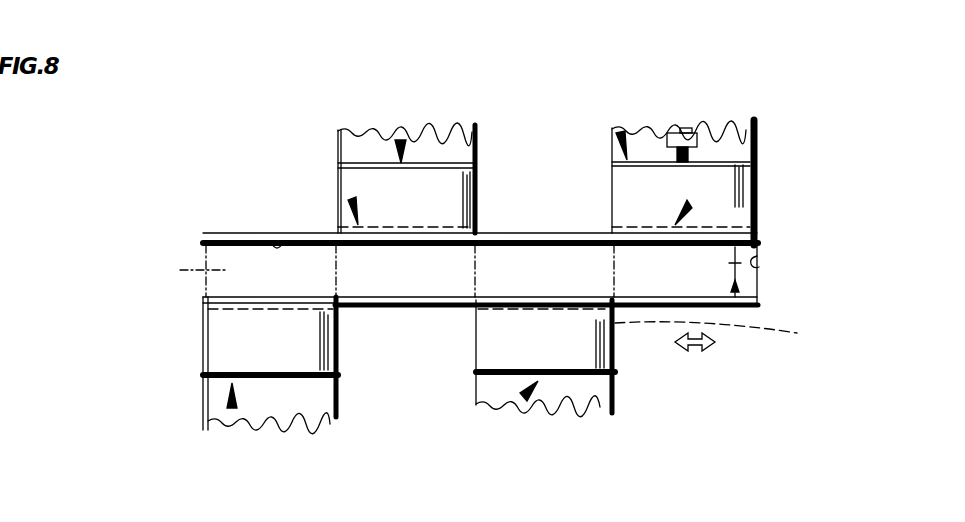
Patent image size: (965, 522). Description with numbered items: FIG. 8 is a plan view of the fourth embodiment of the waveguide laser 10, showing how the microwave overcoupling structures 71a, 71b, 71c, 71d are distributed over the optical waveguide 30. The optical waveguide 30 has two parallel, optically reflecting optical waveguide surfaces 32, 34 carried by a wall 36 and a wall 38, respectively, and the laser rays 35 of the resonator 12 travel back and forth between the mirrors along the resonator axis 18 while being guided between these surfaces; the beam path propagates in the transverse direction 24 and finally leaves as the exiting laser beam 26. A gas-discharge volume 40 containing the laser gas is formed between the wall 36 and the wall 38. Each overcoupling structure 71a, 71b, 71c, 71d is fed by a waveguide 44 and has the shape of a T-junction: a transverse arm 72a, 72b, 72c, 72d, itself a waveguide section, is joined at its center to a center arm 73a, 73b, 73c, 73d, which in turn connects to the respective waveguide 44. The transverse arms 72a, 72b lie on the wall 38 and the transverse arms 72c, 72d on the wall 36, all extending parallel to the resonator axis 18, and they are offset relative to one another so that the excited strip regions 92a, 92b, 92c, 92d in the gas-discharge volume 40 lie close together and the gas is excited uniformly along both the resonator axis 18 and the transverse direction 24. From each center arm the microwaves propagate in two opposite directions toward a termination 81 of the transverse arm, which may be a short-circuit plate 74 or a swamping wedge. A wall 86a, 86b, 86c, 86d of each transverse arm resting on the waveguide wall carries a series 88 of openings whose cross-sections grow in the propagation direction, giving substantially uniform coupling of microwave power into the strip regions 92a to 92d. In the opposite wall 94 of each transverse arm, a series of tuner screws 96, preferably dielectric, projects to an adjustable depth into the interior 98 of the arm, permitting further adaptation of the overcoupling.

The waveguide laser 10 is at (850, 92).
The resonator 12 is at (772, 254).
The resonator axis 18 is at (202, 270).
The transverse direction 24 is at (697, 348).
The exiting laser beam 26 is at (760, 278).
The optical waveguide 30 is at (527, 237).
The optical waveguide surface 32 is at (397, 297).
The optical waveguide surface 34 is at (262, 237).
The laser rays 35 is at (758, 300).
The wall 36 is at (413, 300).
The wall 38 is at (297, 237).
The gas-discharge volume 40 is at (425, 287).
The waveguide 44 is at (470, 128).
The overcoupling structure 71a is at (401, 140).
The overcoupling structure 71b is at (617, 133).
The overcoupling structure 71c is at (523, 398).
The overcoupling structure 71d is at (232, 408).
The transverse arm 72a is at (352, 200).
The transverse arm 72b is at (640, 162).
The transverse arm 72c is at (615, 367).
The transverse arm 72d is at (205, 362).
The center arm 73a is at (476, 125).
The center arm 73b is at (720, 140).
The center arm 73c is at (567, 408).
The center arm 73d is at (203, 425).
The short-circuit plate 74 is at (725, 168).
The termination 81 is at (430, 175).
The wall 86a is at (460, 150).
The wall 86b is at (612, 220).
The wall 86c is at (518, 305).
The wall 86d is at (240, 237).
The series of openings 88 is at (333, 228).
The strip region 92a is at (210, 237).
The strip region 92b is at (338, 265).
The strip region 92c is at (503, 237).
The strip region 92d is at (770, 245).
The wall 94 is at (372, 165).
The tuner screws 96 is at (684, 133).
The interior 98 is at (684, 222).